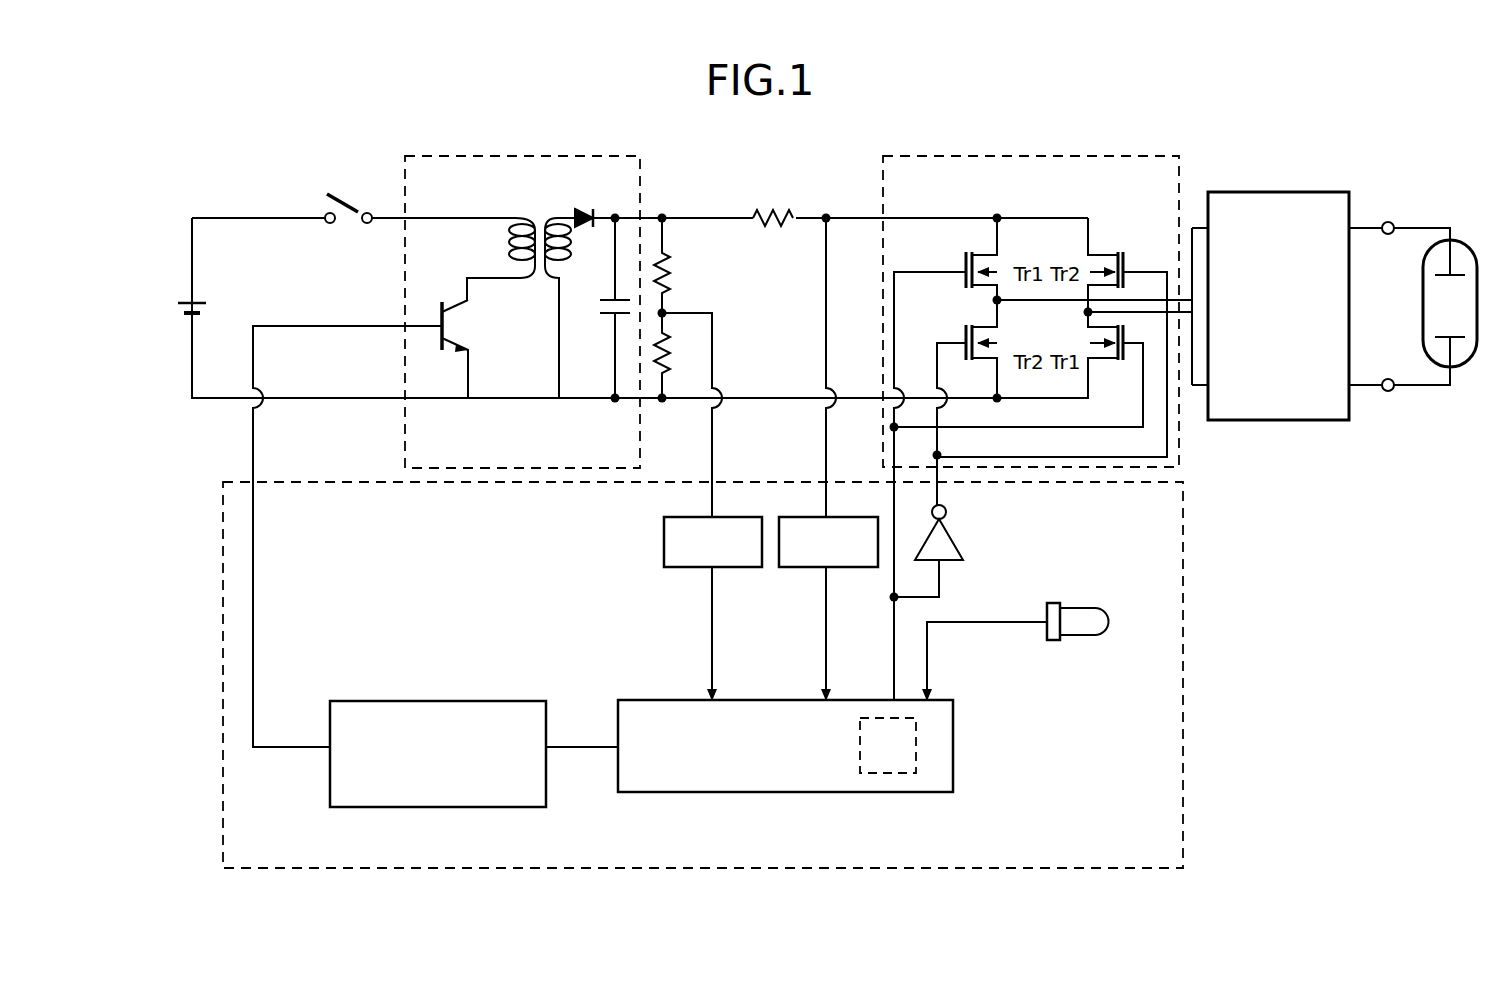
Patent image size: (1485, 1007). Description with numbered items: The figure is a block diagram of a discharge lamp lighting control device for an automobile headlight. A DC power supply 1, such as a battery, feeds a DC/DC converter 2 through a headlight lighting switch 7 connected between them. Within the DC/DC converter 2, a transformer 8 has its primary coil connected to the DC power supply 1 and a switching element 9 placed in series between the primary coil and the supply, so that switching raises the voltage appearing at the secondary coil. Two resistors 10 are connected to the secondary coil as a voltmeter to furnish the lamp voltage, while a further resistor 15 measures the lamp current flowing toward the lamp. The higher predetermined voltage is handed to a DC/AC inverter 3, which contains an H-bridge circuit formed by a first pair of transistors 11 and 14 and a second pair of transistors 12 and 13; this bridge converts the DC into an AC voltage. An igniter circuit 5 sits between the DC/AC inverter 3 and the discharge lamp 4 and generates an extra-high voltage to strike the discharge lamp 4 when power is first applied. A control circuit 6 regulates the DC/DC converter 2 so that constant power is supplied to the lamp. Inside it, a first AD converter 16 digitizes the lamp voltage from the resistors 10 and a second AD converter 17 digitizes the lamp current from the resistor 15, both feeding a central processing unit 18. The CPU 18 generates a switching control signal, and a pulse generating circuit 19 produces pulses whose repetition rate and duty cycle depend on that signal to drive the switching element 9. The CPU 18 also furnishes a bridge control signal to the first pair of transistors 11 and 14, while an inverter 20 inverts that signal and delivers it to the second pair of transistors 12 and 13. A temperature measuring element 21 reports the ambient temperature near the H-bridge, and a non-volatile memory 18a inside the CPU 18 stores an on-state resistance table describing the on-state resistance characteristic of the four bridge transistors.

The DC power supply 1 is at (207, 302).
The DC/DC converter 2 is at (541, 156).
The DC/AC inverter 3 is at (1034, 154).
The discharge lamp 4 is at (1462, 238).
The igniter circuit 5 is at (1274, 189).
The control circuit 6 is at (337, 480).
The headlight lighting switch 7 is at (349, 206).
The transformer 8 is at (546, 204).
The switching element 9 is at (466, 326).
The resistors 10 is at (671, 347).
The transistor 11 is at (962, 258).
The transistor 12 is at (962, 321).
The transistor 13 is at (1082, 256).
The transistor 14 is at (1090, 346).
The resistor 15 is at (776, 233).
The first AD converter 16 is at (664, 549).
The second AD converter 17 is at (858, 570).
The central processing unit 18 is at (813, 771).
The non-volatile memory 18a is at (900, 776).
The pulse generating circuit 19 is at (431, 701).
The inverter 20 is at (958, 540).
The temperature measuring element 21 is at (1077, 603).